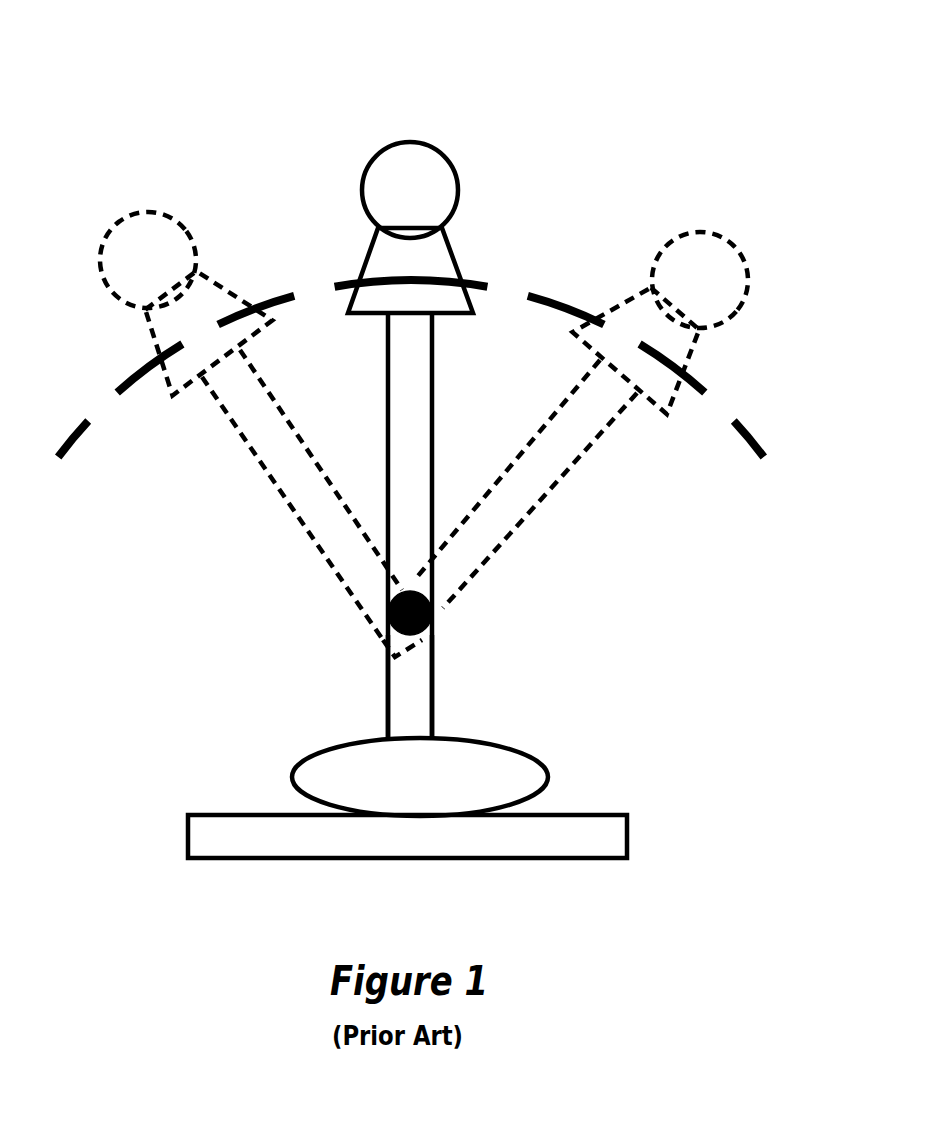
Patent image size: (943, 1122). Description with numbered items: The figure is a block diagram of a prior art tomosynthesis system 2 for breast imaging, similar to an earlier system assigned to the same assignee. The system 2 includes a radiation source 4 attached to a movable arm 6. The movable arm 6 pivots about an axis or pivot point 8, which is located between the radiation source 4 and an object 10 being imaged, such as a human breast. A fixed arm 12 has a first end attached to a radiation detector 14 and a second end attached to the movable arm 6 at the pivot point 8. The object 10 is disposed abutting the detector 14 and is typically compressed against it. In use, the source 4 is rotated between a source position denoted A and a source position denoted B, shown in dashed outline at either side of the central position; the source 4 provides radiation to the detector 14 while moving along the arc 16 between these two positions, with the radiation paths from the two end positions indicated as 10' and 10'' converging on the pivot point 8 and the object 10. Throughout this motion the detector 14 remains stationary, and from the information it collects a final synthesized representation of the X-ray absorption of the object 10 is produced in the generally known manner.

The tomosynthesis system 2 is at (447, 436).
The radiation source 4 is at (430, 246).
The movable arm 6 is at (463, 526).
The pivot point 8 is at (505, 640).
The object being imaged 10 is at (489, 777).
The field of view of camera at position B 10' is at (281, 503).
The field of view of camera at position A 10'' is at (576, 484).
The fixed arm 12 is at (279, 700).
The radiation detector 14 is at (489, 809).
The arc 16 is at (762, 458).